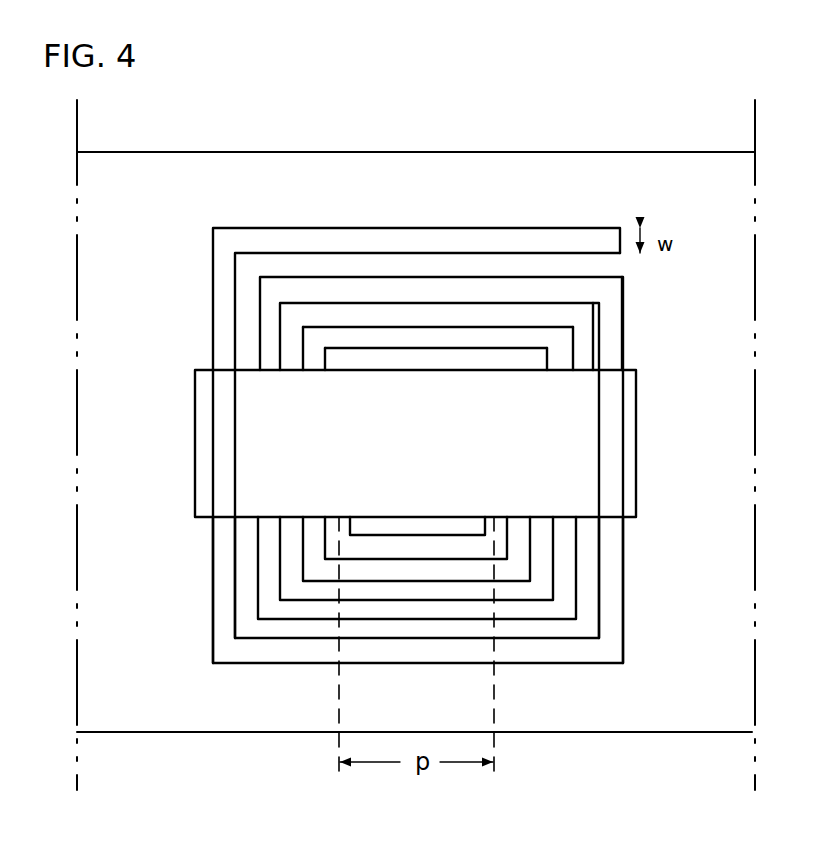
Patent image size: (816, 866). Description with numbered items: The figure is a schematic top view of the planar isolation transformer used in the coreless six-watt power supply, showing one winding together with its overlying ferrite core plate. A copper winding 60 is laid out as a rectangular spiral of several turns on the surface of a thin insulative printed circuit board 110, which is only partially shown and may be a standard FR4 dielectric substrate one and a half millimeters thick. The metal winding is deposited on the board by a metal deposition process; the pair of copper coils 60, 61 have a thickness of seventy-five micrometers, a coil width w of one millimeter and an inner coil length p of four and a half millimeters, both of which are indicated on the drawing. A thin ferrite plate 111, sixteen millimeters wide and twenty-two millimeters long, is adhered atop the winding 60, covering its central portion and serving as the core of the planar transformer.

The winding 60 is at (582, 242).
The copper coil 61 is at (380, 150).
The printed circuit board 110 is at (650, 710).
The ferrite plate 111 is at (610, 458).